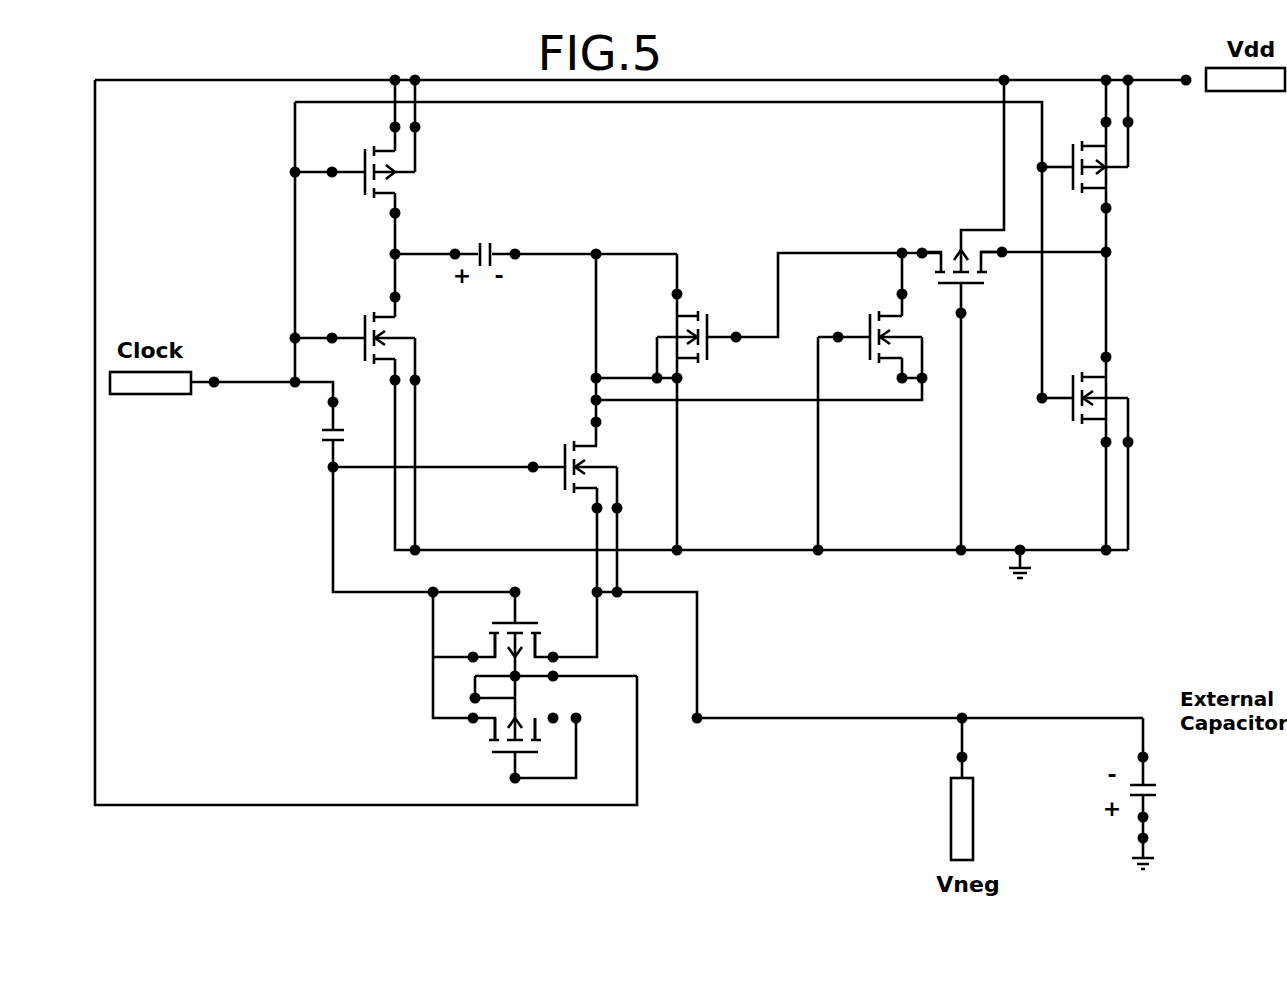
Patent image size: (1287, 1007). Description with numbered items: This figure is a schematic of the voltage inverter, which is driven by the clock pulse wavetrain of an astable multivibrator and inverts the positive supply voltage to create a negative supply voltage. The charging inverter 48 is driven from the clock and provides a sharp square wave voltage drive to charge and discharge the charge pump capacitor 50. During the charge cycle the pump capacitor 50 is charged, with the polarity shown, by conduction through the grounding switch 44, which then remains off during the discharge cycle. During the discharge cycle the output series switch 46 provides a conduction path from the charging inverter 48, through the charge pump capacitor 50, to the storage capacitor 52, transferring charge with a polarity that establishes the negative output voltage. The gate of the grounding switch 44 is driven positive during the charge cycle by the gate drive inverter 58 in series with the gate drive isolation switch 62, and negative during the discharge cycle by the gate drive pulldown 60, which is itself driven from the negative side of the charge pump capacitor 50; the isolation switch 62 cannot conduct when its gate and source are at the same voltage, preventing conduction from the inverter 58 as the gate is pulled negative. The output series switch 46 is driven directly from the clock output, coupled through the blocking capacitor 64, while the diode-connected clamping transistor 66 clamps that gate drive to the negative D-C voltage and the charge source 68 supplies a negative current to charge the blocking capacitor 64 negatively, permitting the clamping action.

The grounding switch 44 is at (710, 318).
The output series switch 46 is at (554, 455).
The charging inverter 48 is at (378, 255).
The charge pump capacitor 50 is at (502, 235).
The storage capacitor 52 is at (1170, 797).
The gate drive inverter 58 is at (1139, 282).
The gate drive pulldown 60 is at (880, 374).
The gate drive isolation switch 62 is at (962, 239).
The blocking capacitor 64 is at (304, 433).
The clamping transistor 66 is at (455, 634).
The charge source 68 is at (453, 726).